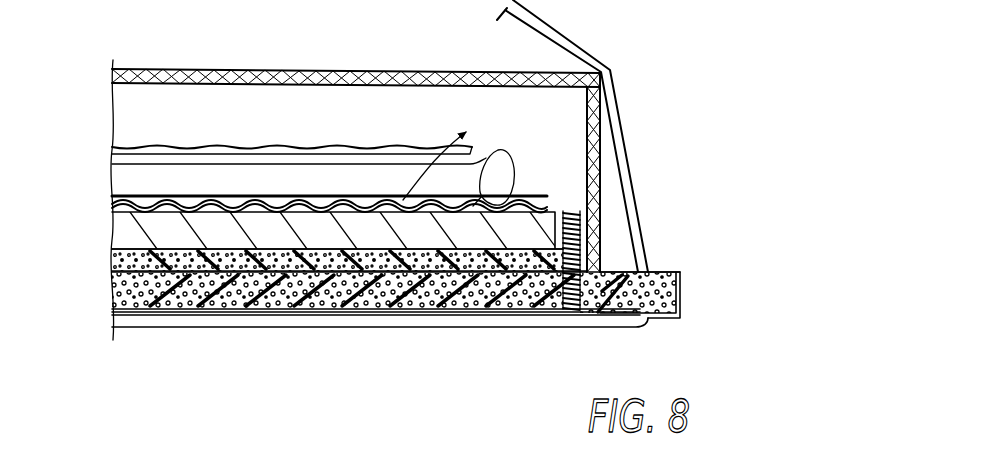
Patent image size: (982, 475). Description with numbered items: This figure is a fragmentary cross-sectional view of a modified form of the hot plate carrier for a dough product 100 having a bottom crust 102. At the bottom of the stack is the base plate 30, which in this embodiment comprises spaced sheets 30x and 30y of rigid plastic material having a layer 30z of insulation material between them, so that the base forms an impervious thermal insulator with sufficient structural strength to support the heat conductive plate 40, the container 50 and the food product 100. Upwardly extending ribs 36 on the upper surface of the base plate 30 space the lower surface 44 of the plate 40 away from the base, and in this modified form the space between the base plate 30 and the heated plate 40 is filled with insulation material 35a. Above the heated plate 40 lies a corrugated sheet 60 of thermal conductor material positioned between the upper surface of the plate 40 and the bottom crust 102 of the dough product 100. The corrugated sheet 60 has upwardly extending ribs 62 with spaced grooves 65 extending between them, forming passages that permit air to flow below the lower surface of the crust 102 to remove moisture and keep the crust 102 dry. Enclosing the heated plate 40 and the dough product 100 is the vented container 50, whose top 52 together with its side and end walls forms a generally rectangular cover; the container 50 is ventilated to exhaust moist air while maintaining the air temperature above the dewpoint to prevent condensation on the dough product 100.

The base plate 30 is at (684, 266).
The sheet of rigid plastic material 30x is at (286, 305).
The sheet of rigid plastic material 30y is at (398, 285).
The layer of insulation material 30z is at (460, 292).
The insulation material 35a is at (246, 283).
The ribs 36 is at (167, 262).
The heat conductive plate 40 is at (140, 219).
The lower surface 44 is at (200, 258).
The vented container 50 is at (188, 60).
The top 52 is at (340, 72).
The corrugated sheet 60 is at (573, 203).
The ribs 62 is at (575, 115).
The grooves 65 is at (150, 196).
The dough product 100 is at (137, 180).
The bottom crust 102 is at (275, 193).